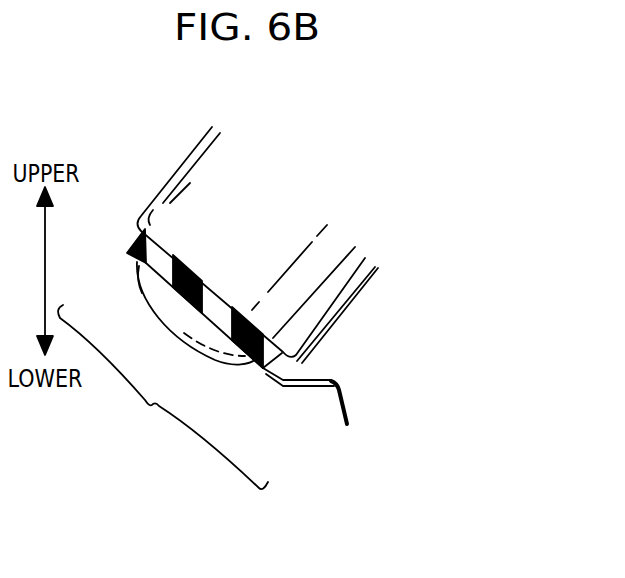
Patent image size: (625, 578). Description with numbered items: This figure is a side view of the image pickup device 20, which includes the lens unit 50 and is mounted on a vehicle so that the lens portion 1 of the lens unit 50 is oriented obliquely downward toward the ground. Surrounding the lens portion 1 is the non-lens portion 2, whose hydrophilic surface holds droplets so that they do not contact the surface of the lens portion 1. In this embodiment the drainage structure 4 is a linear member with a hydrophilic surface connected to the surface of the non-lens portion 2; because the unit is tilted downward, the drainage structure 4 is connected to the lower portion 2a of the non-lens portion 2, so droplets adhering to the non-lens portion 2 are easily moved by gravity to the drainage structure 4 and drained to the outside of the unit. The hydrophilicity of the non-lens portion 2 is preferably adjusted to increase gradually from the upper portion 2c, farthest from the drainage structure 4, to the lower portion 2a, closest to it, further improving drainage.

The lens portion 1 is at (184, 331).
The non-lens portion 2 is at (172, 291).
The lower portion 2a is at (258, 367).
The upper portion 2c is at (128, 254).
The drainage structure 4 is at (297, 387).
The image pickup device 20 is at (352, 320).
The lens unit 50 is at (163, 397).